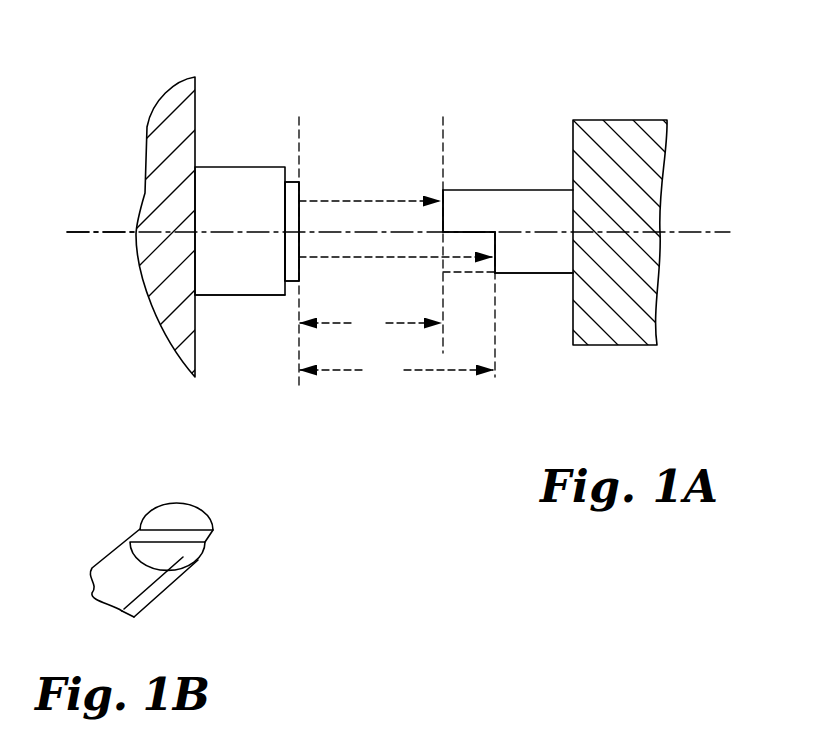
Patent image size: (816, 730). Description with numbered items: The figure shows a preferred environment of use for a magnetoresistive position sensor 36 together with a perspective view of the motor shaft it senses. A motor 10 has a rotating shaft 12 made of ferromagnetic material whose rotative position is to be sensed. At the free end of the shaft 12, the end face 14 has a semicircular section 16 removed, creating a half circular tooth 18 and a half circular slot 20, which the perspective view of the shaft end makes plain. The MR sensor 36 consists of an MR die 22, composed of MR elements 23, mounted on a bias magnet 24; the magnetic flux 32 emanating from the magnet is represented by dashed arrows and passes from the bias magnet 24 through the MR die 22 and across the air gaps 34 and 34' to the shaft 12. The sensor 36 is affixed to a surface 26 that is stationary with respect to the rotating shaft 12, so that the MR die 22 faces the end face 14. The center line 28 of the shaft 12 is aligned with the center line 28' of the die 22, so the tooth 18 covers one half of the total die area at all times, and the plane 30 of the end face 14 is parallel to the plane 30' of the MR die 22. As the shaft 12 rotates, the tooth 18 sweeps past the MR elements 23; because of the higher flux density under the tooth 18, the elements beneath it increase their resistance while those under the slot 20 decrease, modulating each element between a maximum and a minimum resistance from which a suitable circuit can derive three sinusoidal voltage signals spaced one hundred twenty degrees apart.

In FIG. 1A, the motor 10 is at (618, 120).
In FIG. 1A, the rotating shaft 12 is at (498, 190).
In FIG. 1B, the rotating shaft 12 is at (102, 557).
In FIG. 1A, the end face 14 is at (441, 230).
In FIG. 1A, the semicircular section 16 is at (462, 266).
In FIG. 1A, the half circular tooth 18 is at (441, 196).
In FIG. 1B, the half circular tooth 18 is at (183, 513).
In FIG. 1A, the half circular slot 20 is at (497, 267).
In FIG. 1B, the half circular slot 20 is at (187, 552).
In FIG. 1A, the MR die 22 is at (300, 188).
In FIG. 1A, the MR elements 23 is at (300, 188).
In FIG. 1A, the bias magnet 24 is at (222, 167).
In FIG. 1A, the surface 26 is at (195, 98).
In FIG. 1A, the center line 28 is at (418, 197).
In FIG. 1A, the center line 28' is at (84, 253).
In FIG. 1A, the plane 30 is at (475, 200).
In FIG. 1A, the plane 30' is at (322, 208).
In FIG. 1A, the magnetic flux 32 is at (346, 197).
In FIG. 1A, the air gap 34 is at (370, 324).
In FIG. 1A, the air gap 34' is at (397, 307).
In FIG. 1A, the MR position sensor 36 is at (282, 298).